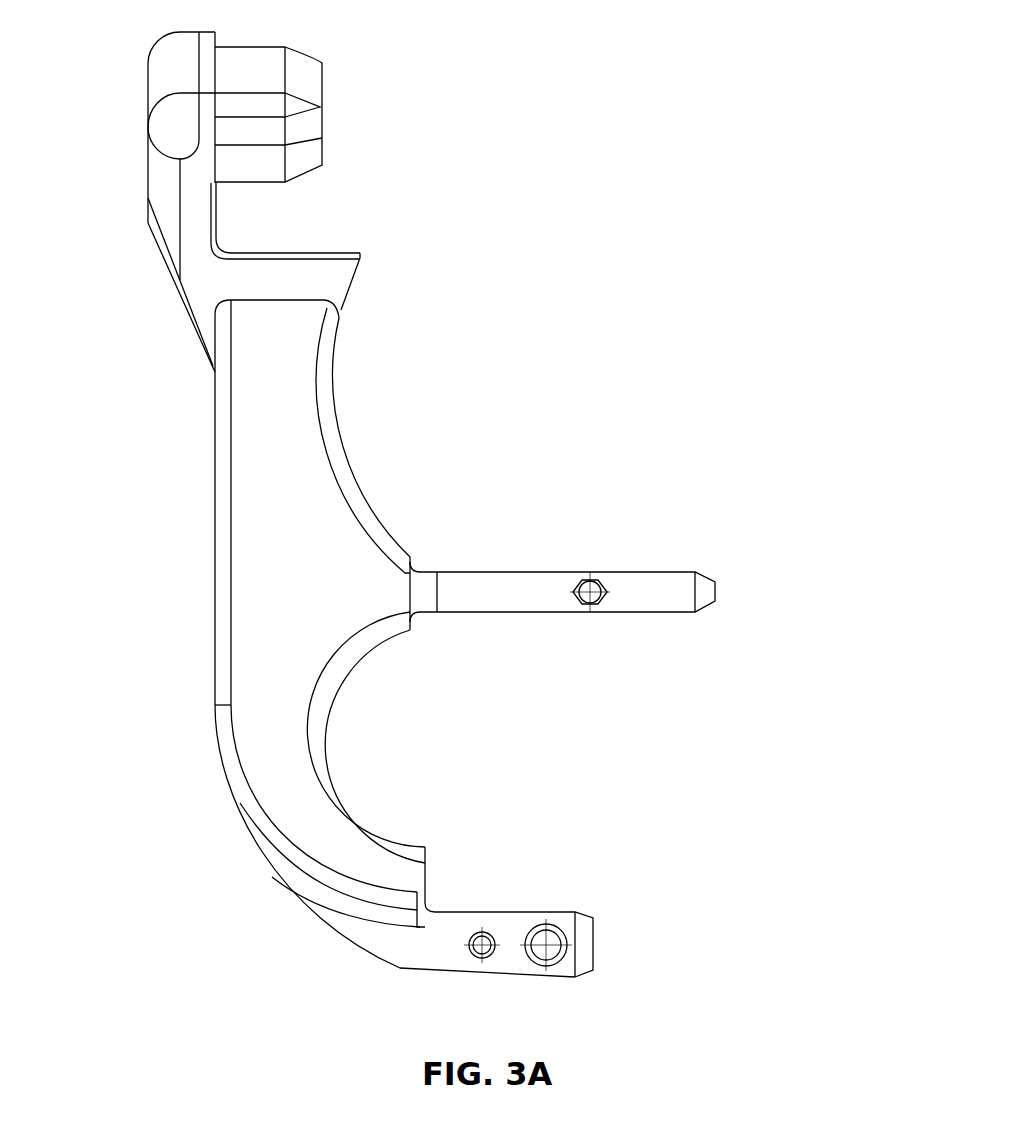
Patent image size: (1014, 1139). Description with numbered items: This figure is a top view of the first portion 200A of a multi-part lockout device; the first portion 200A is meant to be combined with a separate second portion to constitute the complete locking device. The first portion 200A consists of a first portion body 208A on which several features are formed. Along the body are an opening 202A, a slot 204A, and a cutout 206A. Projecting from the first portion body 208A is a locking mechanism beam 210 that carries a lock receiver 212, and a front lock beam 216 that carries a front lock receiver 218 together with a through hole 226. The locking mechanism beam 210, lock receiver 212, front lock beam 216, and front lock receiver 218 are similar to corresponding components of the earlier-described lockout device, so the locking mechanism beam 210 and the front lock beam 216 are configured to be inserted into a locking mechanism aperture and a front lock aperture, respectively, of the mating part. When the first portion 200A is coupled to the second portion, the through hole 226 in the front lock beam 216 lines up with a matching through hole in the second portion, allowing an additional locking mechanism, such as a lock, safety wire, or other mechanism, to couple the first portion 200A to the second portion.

The first portion 200A is at (207, 566).
The opening 202A is at (365, 748).
The slot 204A is at (242, 223).
The cutout 206A is at (243, 82).
The first portion body 208A is at (295, 408).
The locking mechanism beam 210 is at (718, 602).
The lock receiver 212 is at (603, 622).
The front lock beam 216 is at (600, 945).
The front lock receiver 218 is at (555, 927).
The through hole 226 is at (473, 915).